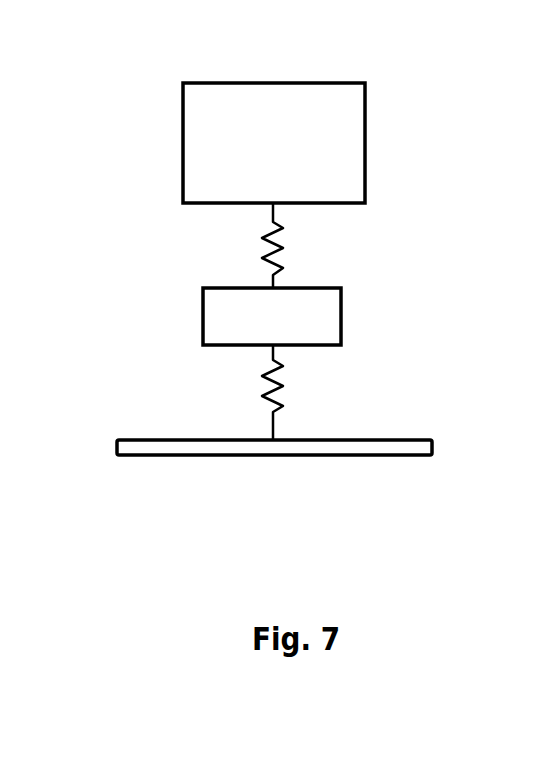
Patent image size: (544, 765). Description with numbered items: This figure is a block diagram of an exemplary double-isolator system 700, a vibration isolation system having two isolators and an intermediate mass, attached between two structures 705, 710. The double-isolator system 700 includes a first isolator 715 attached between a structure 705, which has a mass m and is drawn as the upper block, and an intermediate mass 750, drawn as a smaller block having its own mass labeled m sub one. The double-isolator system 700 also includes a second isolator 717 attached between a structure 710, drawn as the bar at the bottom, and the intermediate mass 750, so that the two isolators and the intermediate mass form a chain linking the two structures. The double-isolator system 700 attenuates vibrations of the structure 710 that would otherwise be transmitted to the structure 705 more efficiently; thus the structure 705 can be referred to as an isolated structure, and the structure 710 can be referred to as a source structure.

The double-isolator system 700 is at (153, 281).
The structure 705 is at (333, 83).
The first isolator 715 is at (262, 247).
The intermediate mass 750 is at (343, 310).
The second isolator 717 is at (265, 380).
The structure 710 is at (262, 456).